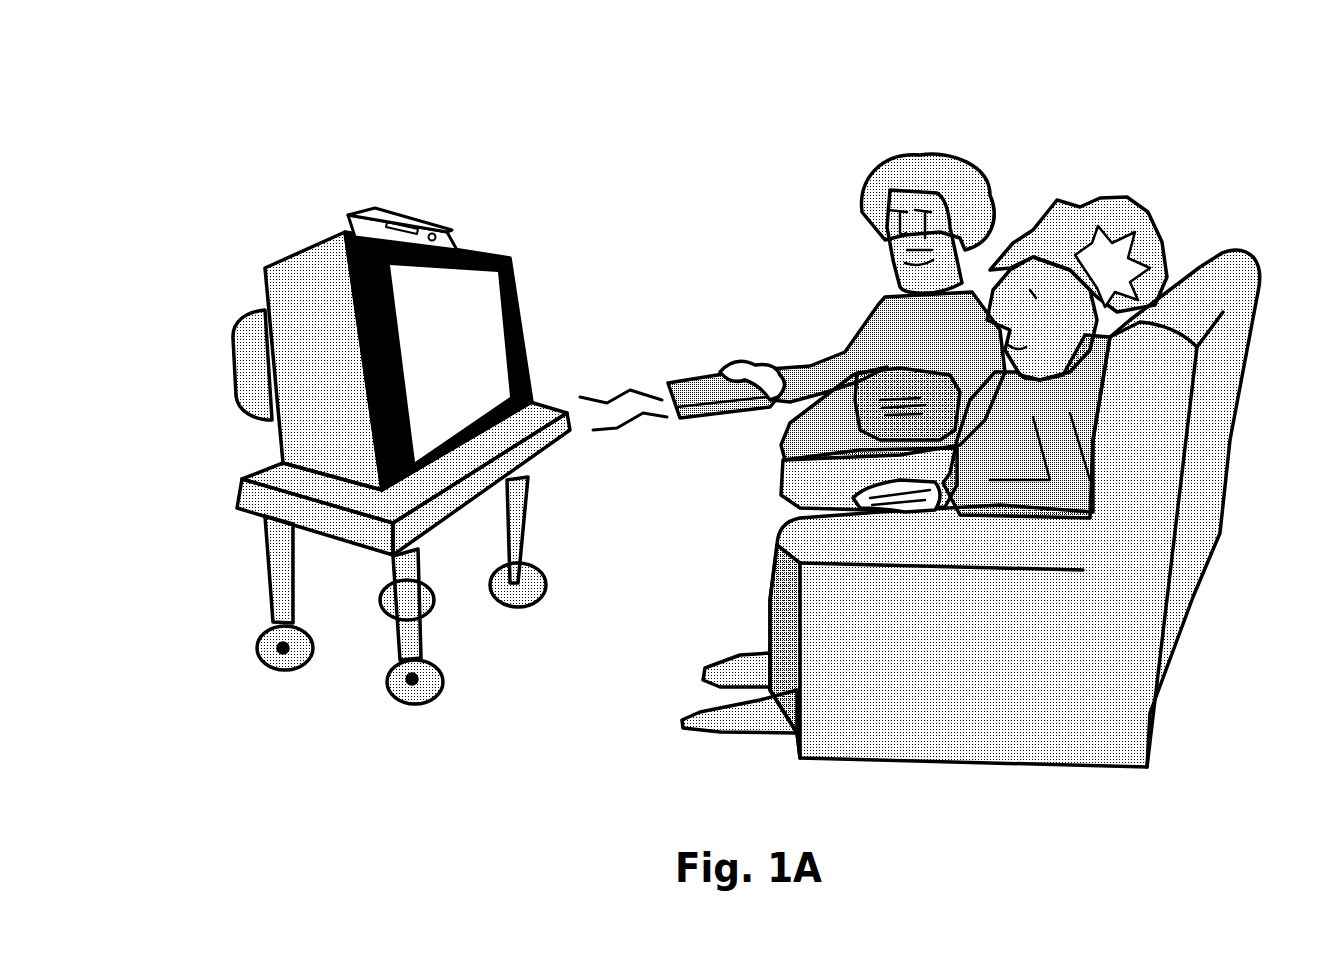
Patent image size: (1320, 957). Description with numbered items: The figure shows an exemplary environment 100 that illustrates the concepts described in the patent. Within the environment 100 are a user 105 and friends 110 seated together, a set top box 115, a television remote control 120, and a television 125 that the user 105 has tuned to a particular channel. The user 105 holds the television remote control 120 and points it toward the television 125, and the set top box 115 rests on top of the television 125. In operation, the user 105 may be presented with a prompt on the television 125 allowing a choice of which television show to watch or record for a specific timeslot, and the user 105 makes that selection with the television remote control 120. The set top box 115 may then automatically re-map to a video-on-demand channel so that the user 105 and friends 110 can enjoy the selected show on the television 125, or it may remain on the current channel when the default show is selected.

The environment 100 is at (377, 113).
The user 105 is at (923, 156).
The friends 110 is at (1087, 197).
The set top box 115 is at (425, 223).
The television remote control 120 is at (693, 378).
The television 125 is at (522, 300).